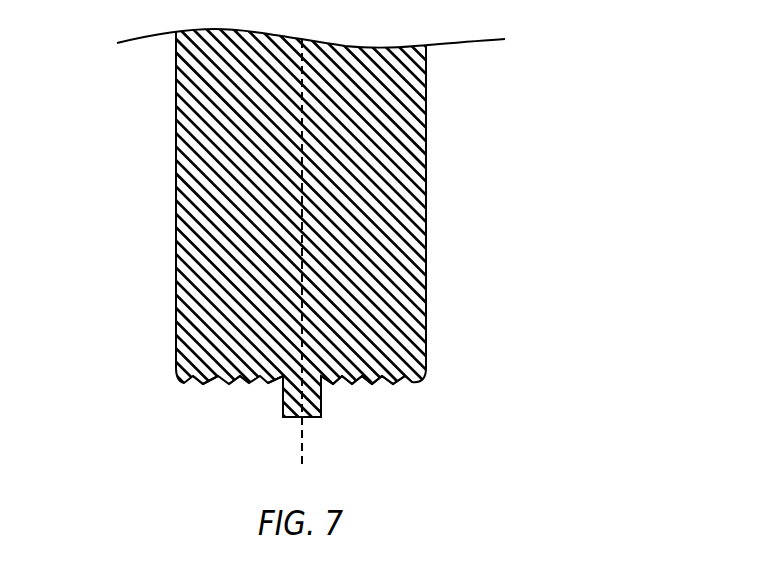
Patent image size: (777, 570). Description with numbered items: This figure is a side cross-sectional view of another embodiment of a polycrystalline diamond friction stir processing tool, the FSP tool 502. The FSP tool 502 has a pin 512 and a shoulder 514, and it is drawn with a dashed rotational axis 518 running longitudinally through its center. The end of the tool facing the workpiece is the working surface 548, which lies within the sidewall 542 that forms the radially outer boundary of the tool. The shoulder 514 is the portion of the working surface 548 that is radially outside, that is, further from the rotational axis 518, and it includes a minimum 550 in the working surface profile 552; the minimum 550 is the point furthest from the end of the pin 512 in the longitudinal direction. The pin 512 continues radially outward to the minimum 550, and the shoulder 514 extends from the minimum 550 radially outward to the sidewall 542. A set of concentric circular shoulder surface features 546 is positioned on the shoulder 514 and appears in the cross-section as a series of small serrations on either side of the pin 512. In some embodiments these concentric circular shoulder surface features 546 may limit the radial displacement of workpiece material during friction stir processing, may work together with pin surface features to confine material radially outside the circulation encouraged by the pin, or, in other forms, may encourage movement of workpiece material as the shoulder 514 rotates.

The FSP tool 502 is at (541, 89).
The pin 512 is at (322, 416).
The shoulder 514 is at (407, 382).
The rotational axis 518 is at (303, 450).
The sidewall 542 is at (175, 335).
The shoulder surface features 546 is at (203, 386).
The working surface 548 is at (243, 390).
The minimum 550 is at (283, 380).
The working surface profile 552 is at (369, 394).